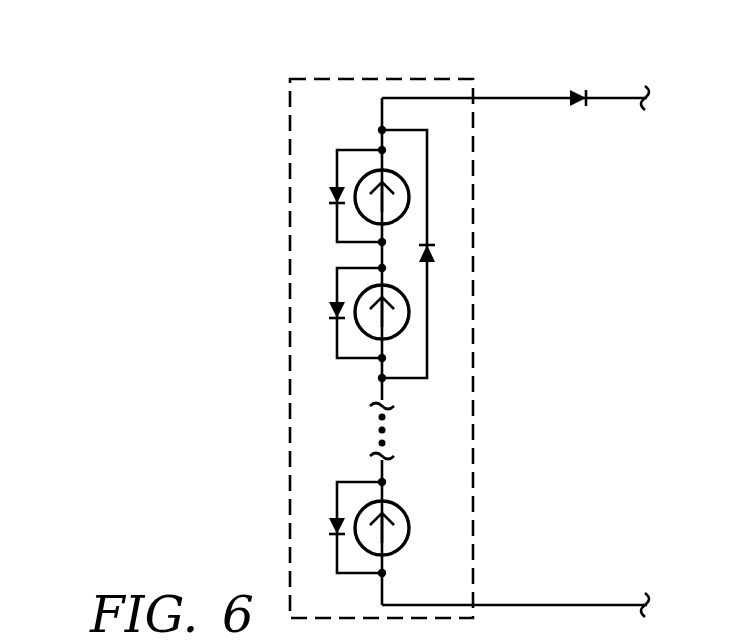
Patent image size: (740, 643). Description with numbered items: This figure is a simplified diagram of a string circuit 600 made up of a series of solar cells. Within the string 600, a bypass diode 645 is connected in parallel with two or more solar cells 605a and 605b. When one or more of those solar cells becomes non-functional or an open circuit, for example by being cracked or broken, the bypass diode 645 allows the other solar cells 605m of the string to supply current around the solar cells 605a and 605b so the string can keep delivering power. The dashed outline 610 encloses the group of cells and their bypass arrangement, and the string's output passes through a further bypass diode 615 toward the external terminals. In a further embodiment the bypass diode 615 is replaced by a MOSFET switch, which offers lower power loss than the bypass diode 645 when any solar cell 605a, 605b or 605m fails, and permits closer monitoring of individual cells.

The string circuit 600 is at (247, 112).
The current source array 610 is at (334, 79).
The bypass diode 615 is at (578, 90).
The solar cell 605a is at (362, 222).
The solar cell 605b is at (362, 340).
The solar cell 605m is at (362, 555).
The bypass diode 645 is at (436, 253).